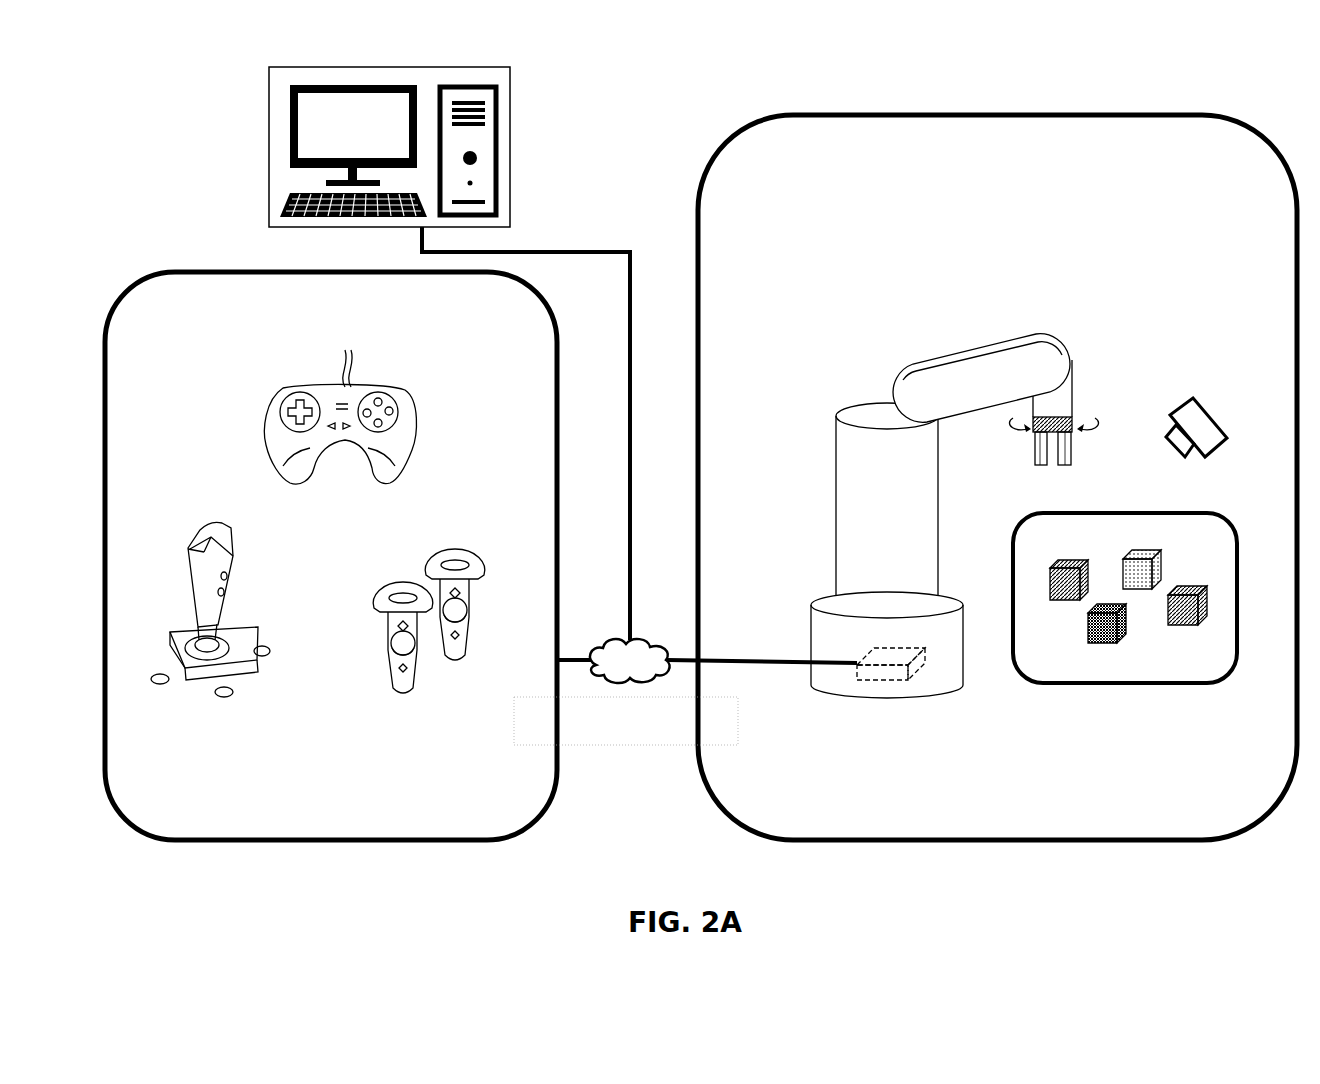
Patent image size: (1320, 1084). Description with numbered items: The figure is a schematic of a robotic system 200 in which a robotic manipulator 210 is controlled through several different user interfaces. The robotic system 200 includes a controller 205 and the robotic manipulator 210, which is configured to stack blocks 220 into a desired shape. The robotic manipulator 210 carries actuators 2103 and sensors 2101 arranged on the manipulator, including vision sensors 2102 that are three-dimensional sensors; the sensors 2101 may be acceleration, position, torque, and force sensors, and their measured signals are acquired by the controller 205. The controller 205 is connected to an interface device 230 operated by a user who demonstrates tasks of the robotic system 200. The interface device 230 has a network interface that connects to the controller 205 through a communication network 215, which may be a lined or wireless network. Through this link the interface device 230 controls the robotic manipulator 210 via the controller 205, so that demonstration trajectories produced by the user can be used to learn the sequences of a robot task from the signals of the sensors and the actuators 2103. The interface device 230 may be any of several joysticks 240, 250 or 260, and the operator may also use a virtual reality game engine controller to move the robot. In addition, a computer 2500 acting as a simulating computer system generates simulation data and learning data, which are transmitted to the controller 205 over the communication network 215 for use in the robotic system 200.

The robotic system 200 is at (702, 210).
The controller 205 is at (857, 680).
The robotic manipulator 210 is at (821, 377).
The communication network 215 is at (657, 645).
The blocks 220 is at (1158, 683).
The interface device 230 is at (243, 262).
The joystick 240 is at (263, 403).
The joystick 250 is at (178, 557).
The joystick 260 is at (435, 675).
The sensors 2101 is at (1082, 455).
The vision sensors 2102 is at (1218, 415).
The actuators 2103 is at (1037, 408).
The computer 2500 is at (512, 135).